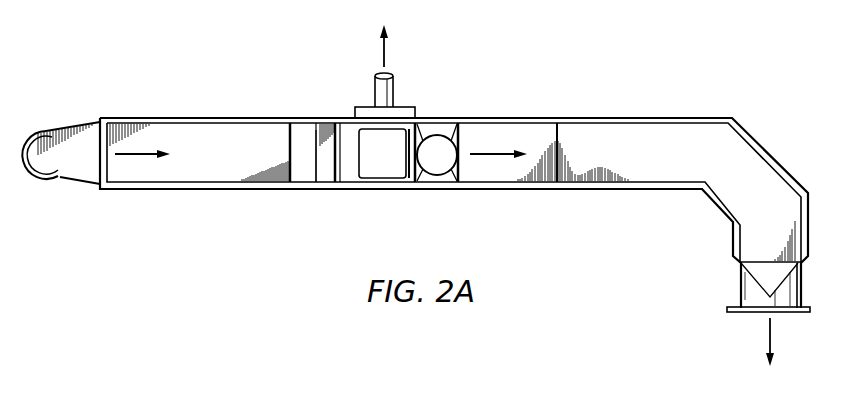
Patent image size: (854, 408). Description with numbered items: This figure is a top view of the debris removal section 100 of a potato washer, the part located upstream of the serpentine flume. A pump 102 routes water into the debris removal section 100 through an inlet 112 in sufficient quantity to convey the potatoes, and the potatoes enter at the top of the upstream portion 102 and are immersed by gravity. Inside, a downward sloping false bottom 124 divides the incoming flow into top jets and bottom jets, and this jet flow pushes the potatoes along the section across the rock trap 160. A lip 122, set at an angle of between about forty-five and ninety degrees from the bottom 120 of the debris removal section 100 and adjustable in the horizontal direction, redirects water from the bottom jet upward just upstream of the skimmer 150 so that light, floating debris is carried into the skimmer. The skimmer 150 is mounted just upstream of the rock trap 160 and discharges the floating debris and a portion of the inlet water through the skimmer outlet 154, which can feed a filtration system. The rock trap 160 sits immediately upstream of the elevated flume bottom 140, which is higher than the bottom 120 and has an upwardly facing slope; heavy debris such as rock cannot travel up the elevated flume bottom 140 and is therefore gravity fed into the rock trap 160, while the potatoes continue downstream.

The debris removal section 100 is at (230, 64).
The pump 102 is at (137, 176).
The inlet 112 is at (82, 173).
The bottom 120 is at (305, 138).
The lip 122 is at (325, 172).
The false bottom 124 is at (213, 176).
The elevated flume bottom 140 is at (496, 138).
The skimmer 150 is at (383, 172).
The skimmer outlet 154 is at (405, 108).
The rock trap 160 is at (440, 172).